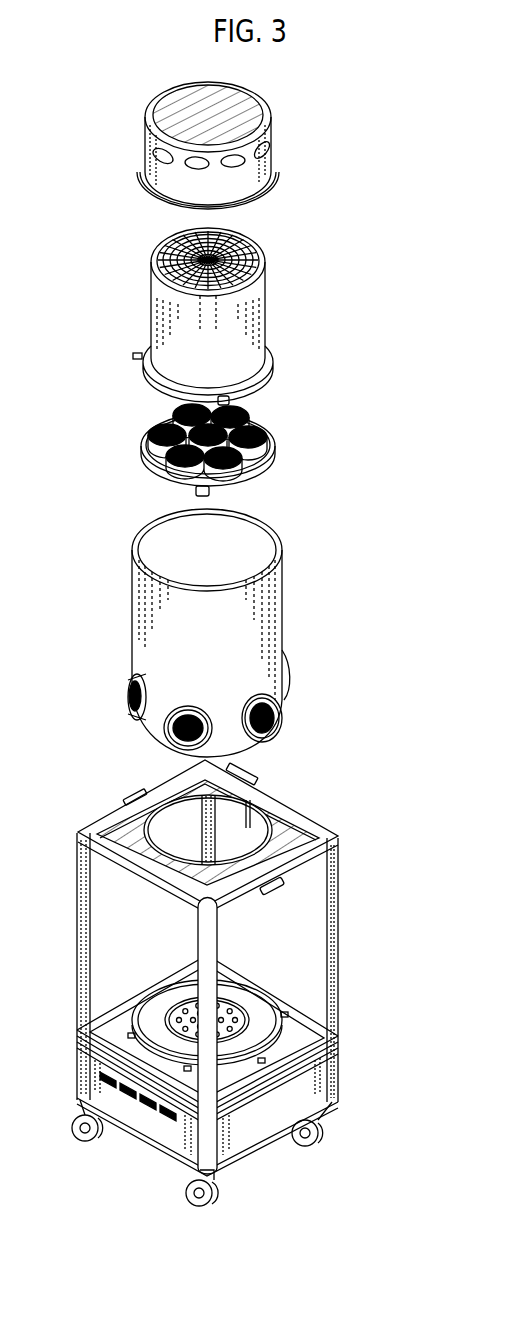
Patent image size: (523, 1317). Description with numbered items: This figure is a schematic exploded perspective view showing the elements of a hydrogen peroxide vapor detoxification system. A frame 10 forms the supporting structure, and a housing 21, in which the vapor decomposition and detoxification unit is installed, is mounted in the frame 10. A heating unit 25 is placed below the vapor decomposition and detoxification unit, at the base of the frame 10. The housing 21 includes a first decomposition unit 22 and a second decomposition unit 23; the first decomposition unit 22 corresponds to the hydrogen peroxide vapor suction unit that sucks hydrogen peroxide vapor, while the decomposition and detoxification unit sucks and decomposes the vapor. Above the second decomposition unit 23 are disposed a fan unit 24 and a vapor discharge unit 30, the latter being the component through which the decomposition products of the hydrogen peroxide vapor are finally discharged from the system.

The frame 10 is at (338, 925).
The housing 21 is at (252, 633).
The first decomposition unit 22 is at (282, 720).
The second decomposition unit 23 is at (275, 442).
The fan unit 24 is at (257, 305).
The heating unit 25 is at (257, 1037).
The vapor discharge unit 30 is at (273, 140).